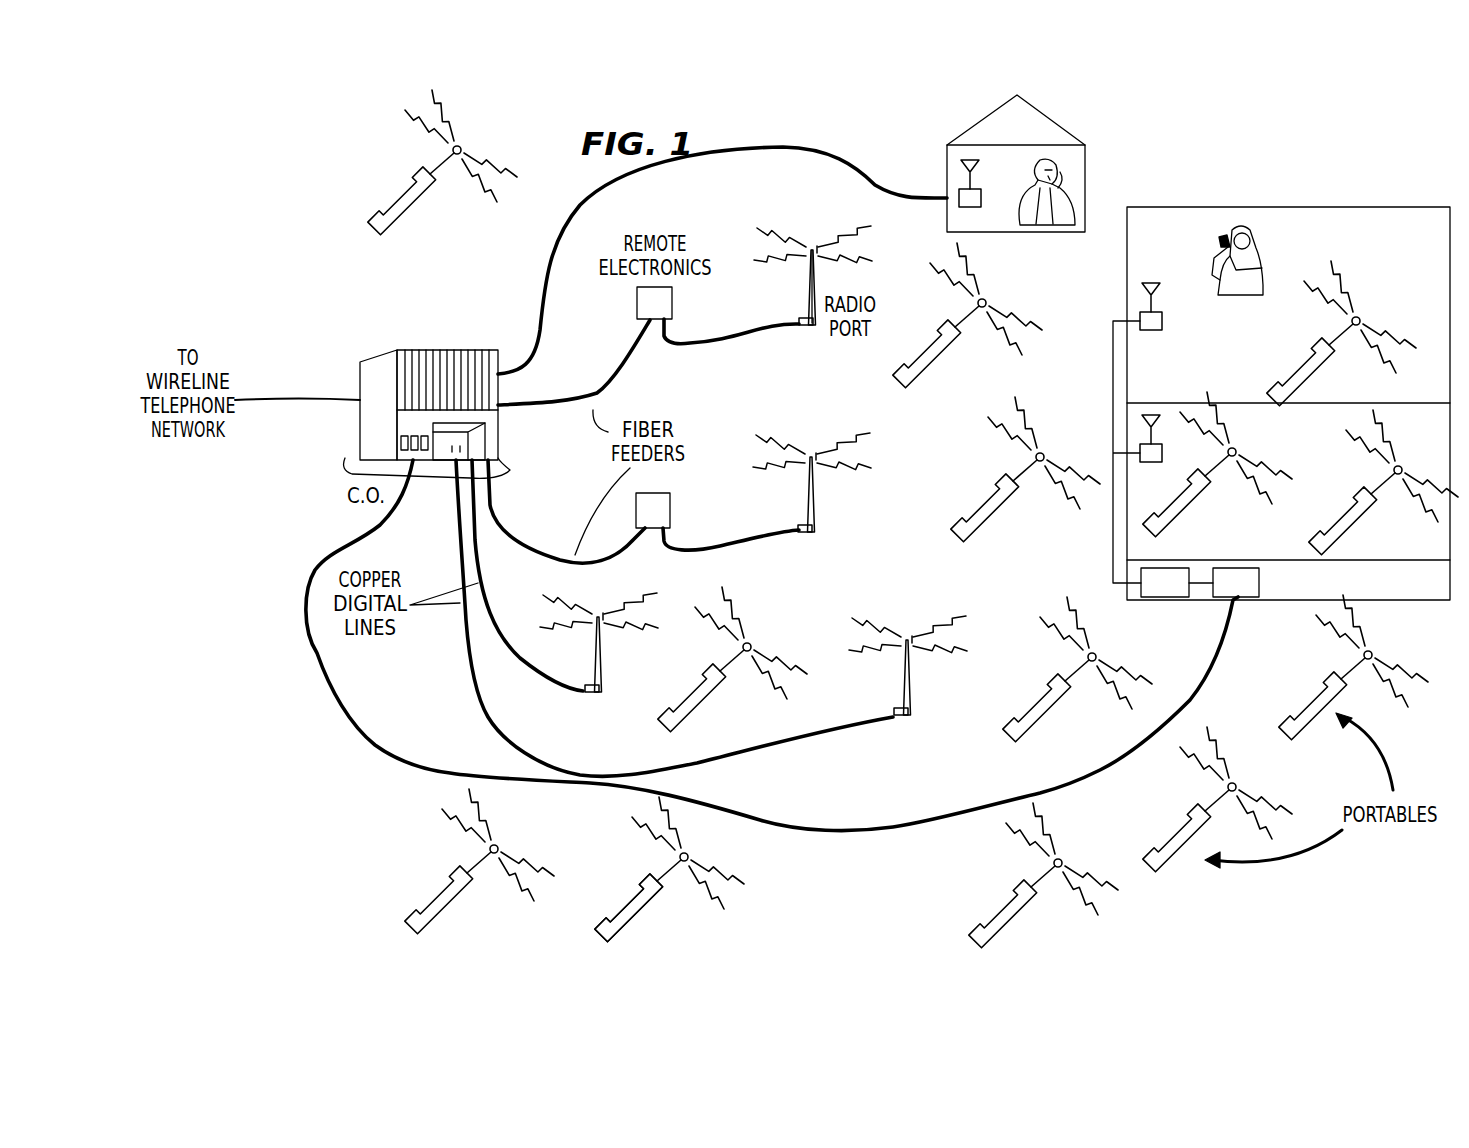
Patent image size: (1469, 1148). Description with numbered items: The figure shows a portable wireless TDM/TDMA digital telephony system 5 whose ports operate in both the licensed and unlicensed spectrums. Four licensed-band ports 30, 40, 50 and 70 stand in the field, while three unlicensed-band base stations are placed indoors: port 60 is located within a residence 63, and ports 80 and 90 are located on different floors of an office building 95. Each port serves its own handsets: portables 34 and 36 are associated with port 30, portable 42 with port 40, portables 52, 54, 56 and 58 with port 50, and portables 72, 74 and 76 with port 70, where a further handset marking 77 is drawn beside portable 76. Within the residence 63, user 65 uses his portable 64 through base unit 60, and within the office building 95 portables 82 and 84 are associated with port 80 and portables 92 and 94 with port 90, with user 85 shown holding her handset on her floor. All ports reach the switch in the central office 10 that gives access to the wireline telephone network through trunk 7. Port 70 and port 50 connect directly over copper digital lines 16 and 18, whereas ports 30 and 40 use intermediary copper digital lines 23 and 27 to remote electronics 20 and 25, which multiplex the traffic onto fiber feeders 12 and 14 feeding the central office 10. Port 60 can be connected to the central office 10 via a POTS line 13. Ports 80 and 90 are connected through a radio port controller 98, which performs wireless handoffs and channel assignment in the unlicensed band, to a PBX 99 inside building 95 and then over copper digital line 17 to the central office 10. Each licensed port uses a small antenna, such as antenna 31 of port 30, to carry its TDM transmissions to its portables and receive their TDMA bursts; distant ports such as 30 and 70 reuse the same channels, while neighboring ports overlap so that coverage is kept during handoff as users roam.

The system 5 is at (290, 798).
The trunk 7 is at (283, 397).
The central office 10 is at (388, 360).
The fiber feeder 12 is at (620, 370).
The POTS line 13 is at (550, 240).
The fiber feeder 14 is at (558, 550).
The copper digital line 16 is at (545, 677).
The copper digital line 17 is at (347, 715).
The copper digital line 18 is at (487, 723).
The remote electronics 20 is at (637, 300).
The copper digital line 23 is at (710, 342).
The remote electronics 25 is at (672, 508).
The copper digital line 27 is at (775, 540).
The port 30 is at (810, 327).
The antenna 31 is at (813, 250).
The portable 34 is at (935, 365).
The portable 36 is at (425, 185).
The port 40 is at (818, 528).
The portable 42 is at (985, 500).
The port 50 is at (905, 725).
The portable 52 is at (1005, 893).
The portable 54 is at (1050, 690).
The portable 56 is at (1180, 820).
The portable 58 is at (1320, 690).
The port 60 is at (959, 195).
The residence 63 is at (1050, 118).
The portable 64 is at (1058, 172).
The user 65 is at (1085, 200).
The port 70 is at (598, 700).
The portable 72 is at (448, 885).
The portable 74 is at (710, 697).
The portable 76 is at (633, 902).
The portable handset 77 is at (673, 885).
The port 80 is at (1158, 332).
The portable 82 is at (1215, 243).
The portable 84 is at (1298, 372).
The user 85 is at (1265, 260).
The port 90 is at (1150, 463).
The portable 92 is at (1195, 505).
The portable 94 is at (1350, 515).
The office building 95 is at (1283, 207).
The radio port controller 98 is at (1160, 600).
The PBX 99 is at (1252, 600).